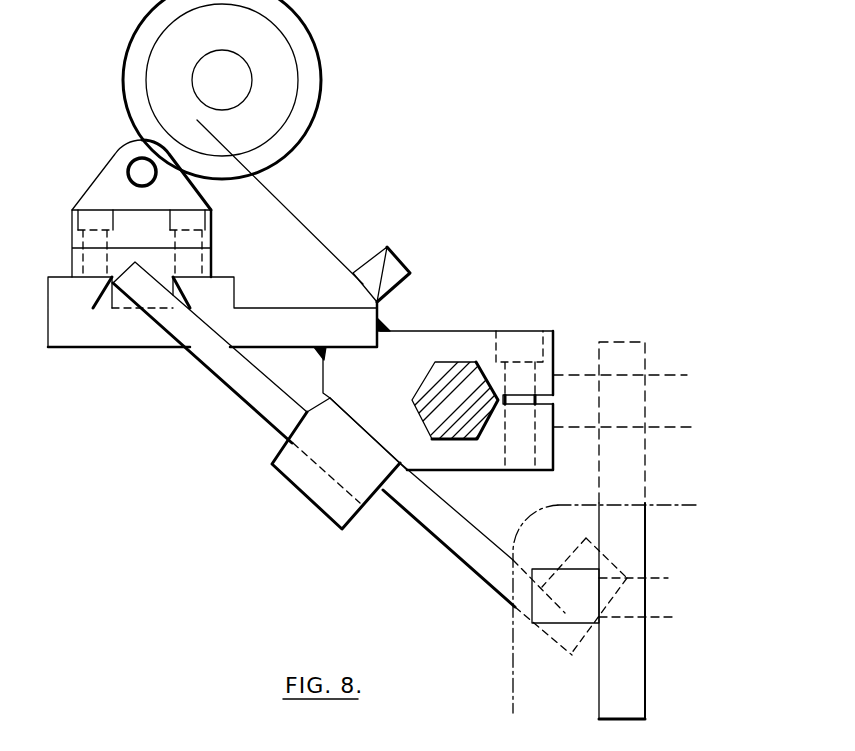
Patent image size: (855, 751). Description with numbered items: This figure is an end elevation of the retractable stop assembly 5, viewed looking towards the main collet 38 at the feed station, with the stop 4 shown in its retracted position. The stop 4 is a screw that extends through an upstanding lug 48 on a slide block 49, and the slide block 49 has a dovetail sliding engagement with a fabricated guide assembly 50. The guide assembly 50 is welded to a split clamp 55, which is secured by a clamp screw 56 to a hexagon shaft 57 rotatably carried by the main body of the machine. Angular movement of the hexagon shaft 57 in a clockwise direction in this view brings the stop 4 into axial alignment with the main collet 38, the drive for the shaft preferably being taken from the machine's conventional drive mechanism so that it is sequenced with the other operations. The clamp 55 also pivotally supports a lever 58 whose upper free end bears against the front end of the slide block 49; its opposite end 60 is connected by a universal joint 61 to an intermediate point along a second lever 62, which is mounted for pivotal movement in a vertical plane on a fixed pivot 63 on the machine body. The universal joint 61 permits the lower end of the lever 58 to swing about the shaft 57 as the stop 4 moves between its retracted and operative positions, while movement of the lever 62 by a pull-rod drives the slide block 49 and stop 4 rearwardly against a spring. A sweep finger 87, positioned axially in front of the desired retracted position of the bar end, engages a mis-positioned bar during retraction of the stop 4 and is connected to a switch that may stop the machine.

The stop 4 is at (134, 171).
The stop assembly 5 is at (460, 249).
The main collet 38 is at (312, 100).
The upstanding lug 48 is at (187, 196).
The slide block 49 is at (200, 236).
The guide assembly 50 is at (117, 335).
The split clamp 55 is at (448, 340).
The clamp screw 56 is at (530, 342).
The hexagon shaft 57 is at (477, 362).
The lever 58 is at (357, 512).
The opposite end of lever 60 is at (503, 585).
The universal joint 61 is at (576, 622).
The lever 62 is at (627, 473).
The fixed pivot 63 is at (647, 405).
The sweep finger 87 is at (280, 198).